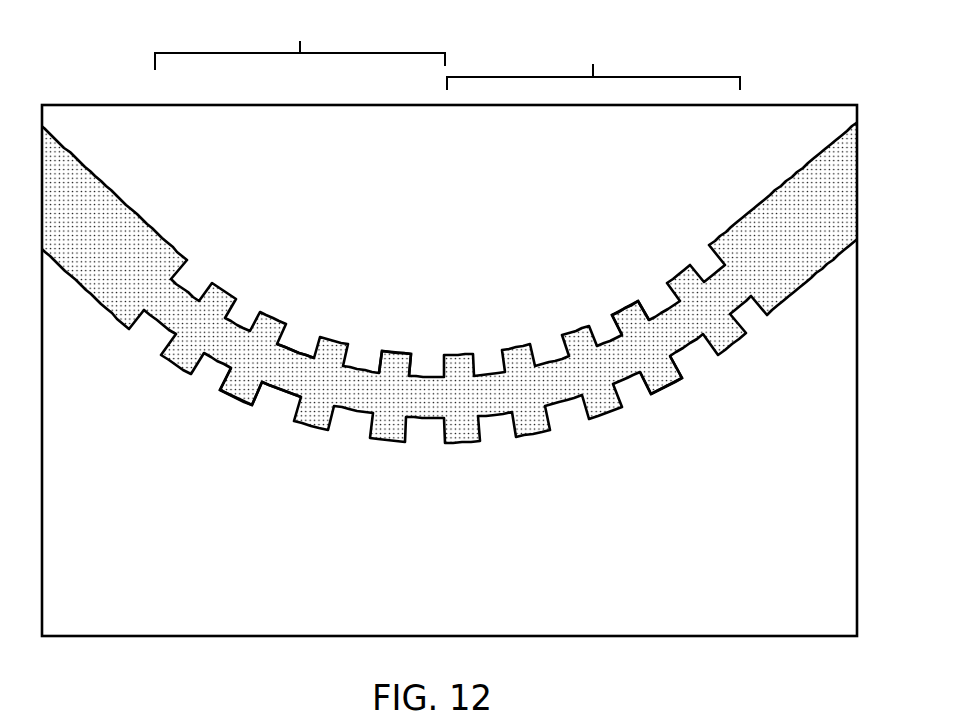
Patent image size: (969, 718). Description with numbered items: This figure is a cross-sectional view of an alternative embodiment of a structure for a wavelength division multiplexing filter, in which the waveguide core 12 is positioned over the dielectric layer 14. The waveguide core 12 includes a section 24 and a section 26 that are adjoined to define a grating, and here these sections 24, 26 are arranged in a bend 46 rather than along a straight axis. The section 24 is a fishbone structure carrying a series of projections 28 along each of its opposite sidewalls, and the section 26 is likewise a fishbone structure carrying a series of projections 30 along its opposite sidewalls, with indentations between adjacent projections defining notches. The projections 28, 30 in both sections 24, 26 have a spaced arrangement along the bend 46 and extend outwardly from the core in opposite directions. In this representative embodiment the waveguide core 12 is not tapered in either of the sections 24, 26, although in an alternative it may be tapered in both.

The waveguide core 12 is at (700, 175).
The dielectric layer 14 is at (53, 616).
The section 24 is at (300, 42).
The section 26 is at (593, 62).
The projections 28 is at (621, 316).
The projections 30 is at (240, 382).
The bend 46 is at (289, 366).